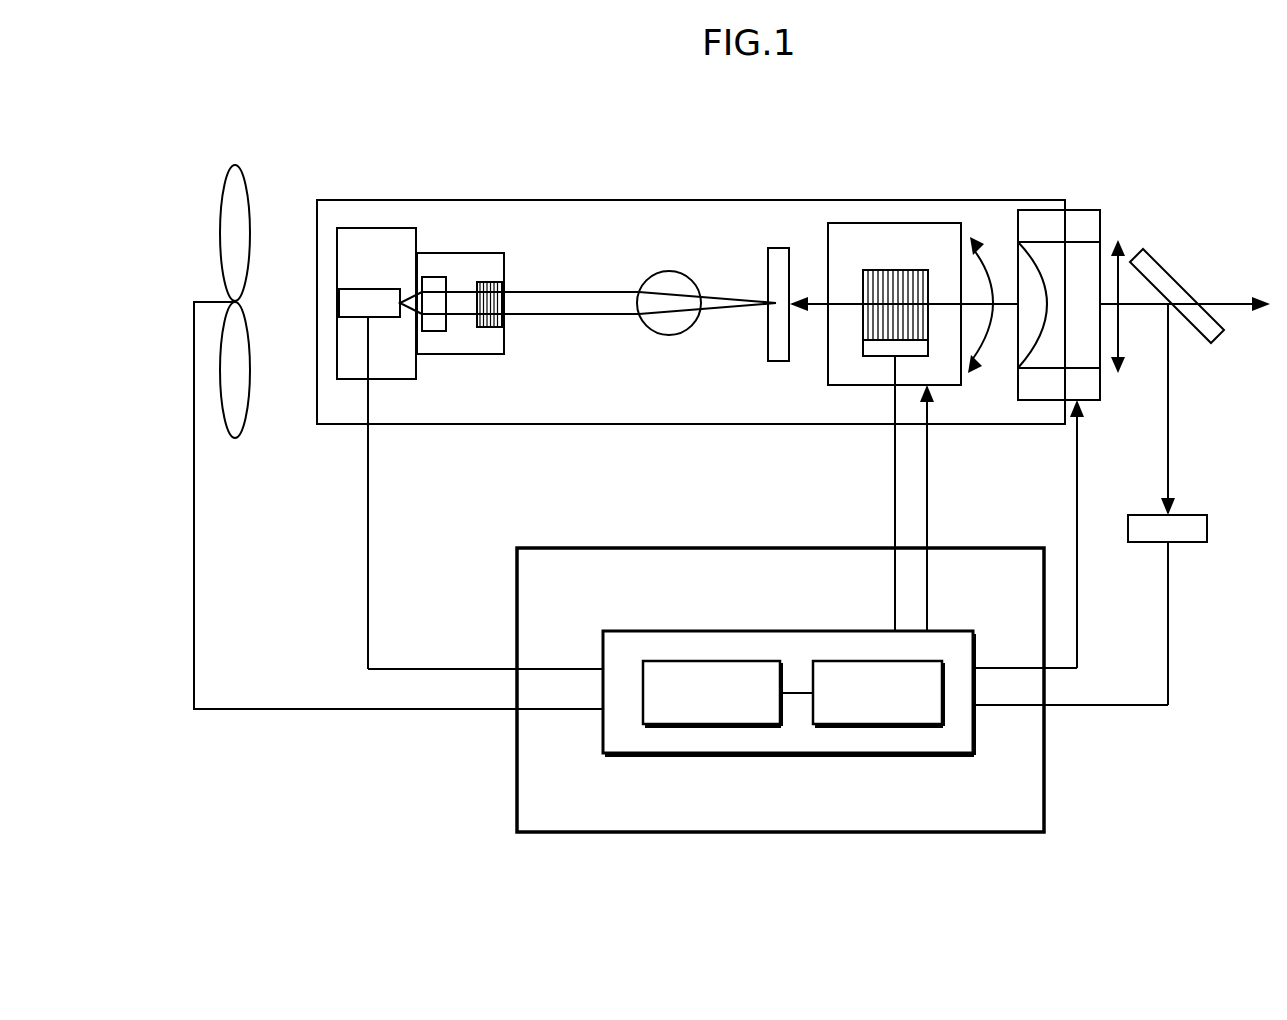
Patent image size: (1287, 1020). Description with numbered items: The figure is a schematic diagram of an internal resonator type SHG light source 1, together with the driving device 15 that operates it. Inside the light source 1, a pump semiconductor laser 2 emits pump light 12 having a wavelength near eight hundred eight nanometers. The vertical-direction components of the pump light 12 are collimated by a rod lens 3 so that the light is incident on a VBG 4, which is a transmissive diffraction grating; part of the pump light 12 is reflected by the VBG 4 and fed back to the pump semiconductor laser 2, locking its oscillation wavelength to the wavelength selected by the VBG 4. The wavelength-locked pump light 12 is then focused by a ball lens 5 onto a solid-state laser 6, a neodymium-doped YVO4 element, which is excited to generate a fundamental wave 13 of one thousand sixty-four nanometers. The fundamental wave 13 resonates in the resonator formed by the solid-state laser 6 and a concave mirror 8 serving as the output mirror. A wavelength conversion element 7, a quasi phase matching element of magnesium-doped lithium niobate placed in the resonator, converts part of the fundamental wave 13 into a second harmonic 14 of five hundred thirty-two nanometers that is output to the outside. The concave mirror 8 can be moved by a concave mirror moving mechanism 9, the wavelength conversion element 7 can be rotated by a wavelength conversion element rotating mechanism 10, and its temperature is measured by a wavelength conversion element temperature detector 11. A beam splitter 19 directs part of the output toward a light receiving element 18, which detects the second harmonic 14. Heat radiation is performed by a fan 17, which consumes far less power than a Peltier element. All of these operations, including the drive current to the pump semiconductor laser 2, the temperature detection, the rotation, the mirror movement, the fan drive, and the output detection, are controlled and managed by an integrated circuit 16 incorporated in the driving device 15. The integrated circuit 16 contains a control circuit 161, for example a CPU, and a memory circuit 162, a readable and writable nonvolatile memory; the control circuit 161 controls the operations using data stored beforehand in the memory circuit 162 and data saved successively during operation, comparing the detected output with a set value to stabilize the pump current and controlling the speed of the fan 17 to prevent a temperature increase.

The internal resonator type SHG light source 1 is at (596, 164).
The pump semiconductor laser 2 is at (360, 289).
The rod lens 3 is at (438, 277).
The VBG (Volume Bragg Grating) 4 is at (493, 282).
The ball lens 5 is at (678, 271).
The solid-state laser 6 is at (778, 248).
The wavelength conversion element 7 is at (920, 270).
The concave mirror 8 is at (1088, 242).
The concave mirror moving mechanism 9 is at (1097, 400).
The wavelength conversion element rotating mechanism 10 is at (858, 223).
The wavelength conversion element temperature detector 11 is at (878, 357).
The pump light 12 is at (573, 320).
The fundamental wave 13 is at (950, 308).
The second harmonic 14 is at (1233, 304).
The driving device 15 is at (1046, 779).
The integrated circuit 16 is at (953, 753).
The control circuit 161 is at (712, 724).
The memory circuit 162 is at (883, 724).
The fan 17 is at (236, 438).
The light receiving element 18 is at (1207, 528).
The beam splitter 19 is at (1218, 336).